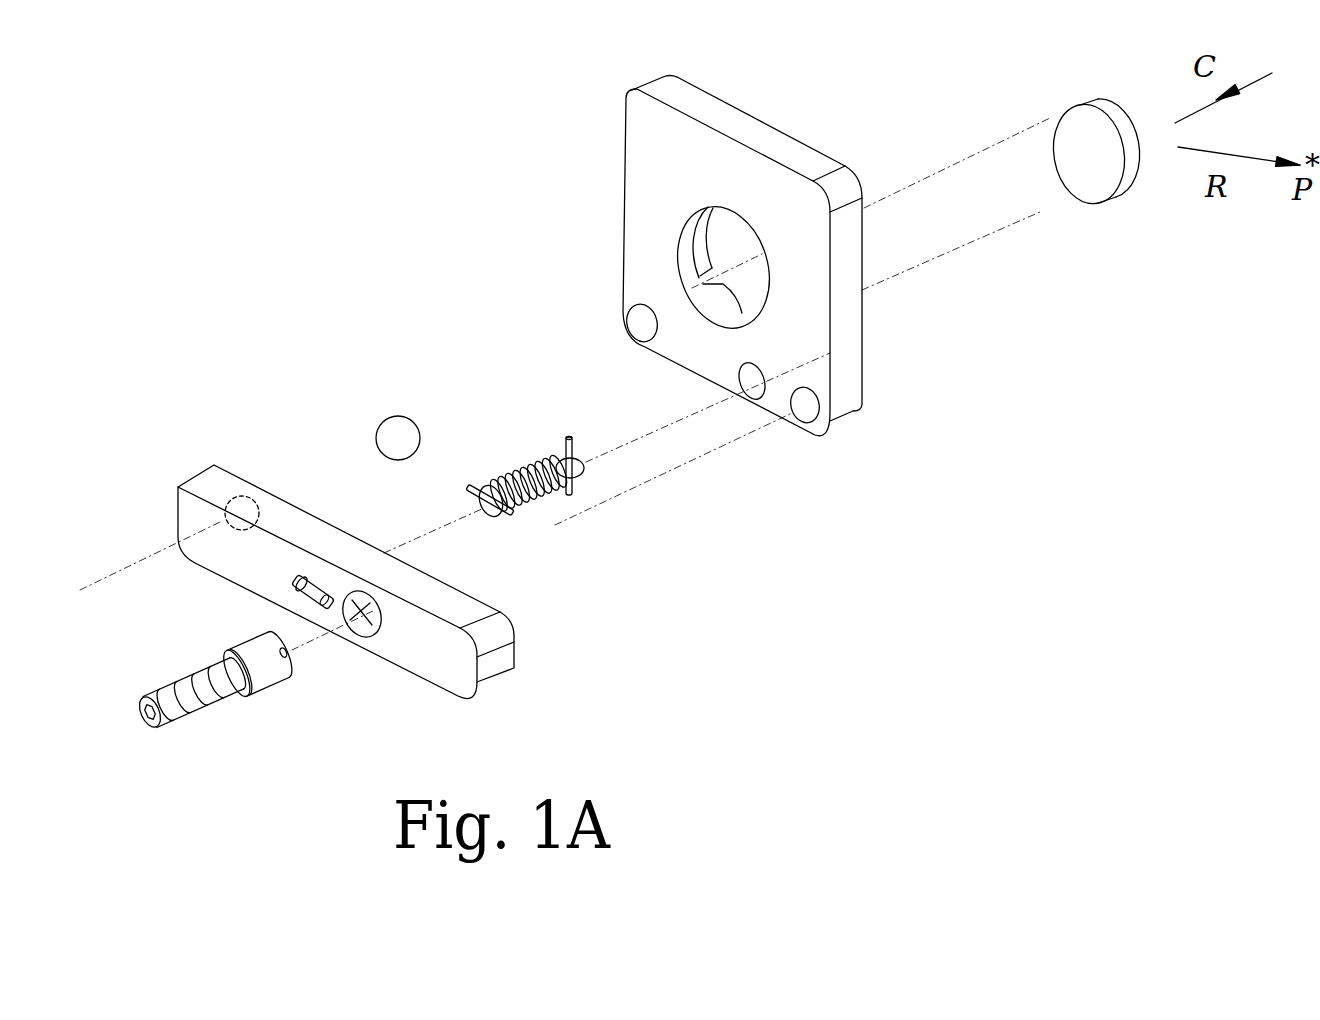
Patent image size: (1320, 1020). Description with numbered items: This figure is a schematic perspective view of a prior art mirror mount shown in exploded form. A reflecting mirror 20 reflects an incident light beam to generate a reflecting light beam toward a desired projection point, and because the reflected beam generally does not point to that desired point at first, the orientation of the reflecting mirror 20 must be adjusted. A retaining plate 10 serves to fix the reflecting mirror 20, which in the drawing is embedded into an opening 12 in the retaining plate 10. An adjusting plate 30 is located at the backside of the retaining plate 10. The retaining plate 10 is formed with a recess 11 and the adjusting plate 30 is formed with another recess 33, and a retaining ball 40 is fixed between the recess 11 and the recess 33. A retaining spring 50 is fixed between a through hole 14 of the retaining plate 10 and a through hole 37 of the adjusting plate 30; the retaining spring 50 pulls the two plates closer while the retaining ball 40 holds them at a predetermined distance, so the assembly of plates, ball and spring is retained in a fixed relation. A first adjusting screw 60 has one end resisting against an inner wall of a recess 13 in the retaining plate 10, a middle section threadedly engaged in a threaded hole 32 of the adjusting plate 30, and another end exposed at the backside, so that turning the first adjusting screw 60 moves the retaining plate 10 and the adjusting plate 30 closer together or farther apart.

The retaining plate 10 is at (640, 213).
The recess 11 is at (640, 325).
The opening 12 is at (757, 300).
The recess 13 is at (813, 395).
The through hole 14 is at (747, 365).
The reflecting mirror 20 is at (1098, 132).
The adjusting plate 30 is at (195, 482).
The threaded hole 32 is at (360, 595).
The recess 33 is at (245, 515).
The through hole 37 is at (304, 598).
The retaining ball 40 is at (390, 428).
The retaining spring 50 is at (553, 460).
The first adjusting screw 60 is at (204, 676).